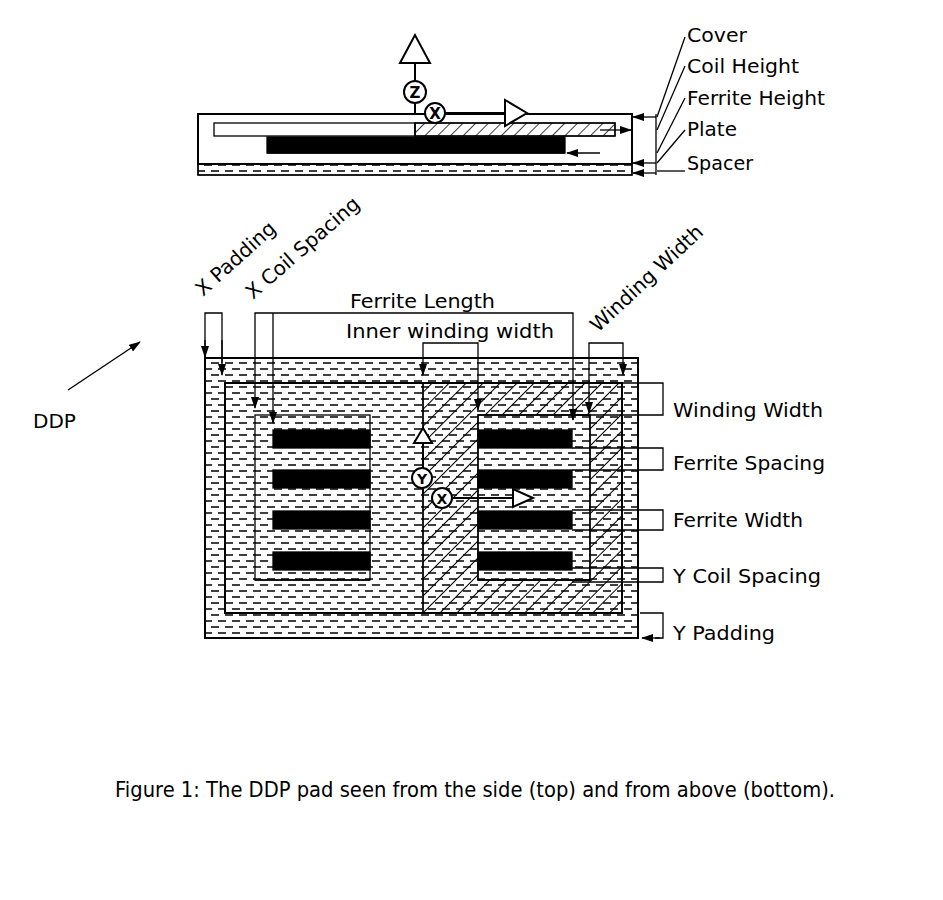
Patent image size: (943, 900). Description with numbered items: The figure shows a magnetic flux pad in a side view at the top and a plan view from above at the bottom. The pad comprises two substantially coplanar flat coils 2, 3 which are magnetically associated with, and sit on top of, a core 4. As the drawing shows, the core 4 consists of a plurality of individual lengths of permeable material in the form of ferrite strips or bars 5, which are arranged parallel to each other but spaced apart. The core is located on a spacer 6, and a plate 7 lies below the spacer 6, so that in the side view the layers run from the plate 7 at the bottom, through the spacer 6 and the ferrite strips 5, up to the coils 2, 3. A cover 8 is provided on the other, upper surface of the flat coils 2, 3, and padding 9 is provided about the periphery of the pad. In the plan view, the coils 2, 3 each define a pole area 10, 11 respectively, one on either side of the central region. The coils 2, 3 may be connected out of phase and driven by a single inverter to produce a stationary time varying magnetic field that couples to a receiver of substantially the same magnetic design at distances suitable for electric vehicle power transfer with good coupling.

The coil 2 is at (285, 130).
The coil 3 is at (540, 128).
The core 4 is at (456, 154).
The ferrite strips or bars 5 is at (394, 153).
The spacer 6 is at (513, 154).
The plate 7 is at (600, 175).
The cover 8 is at (248, 116).
The padding 9 is at (640, 363).
The pole area 10 is at (296, 569).
The pole area 11 is at (513, 582).